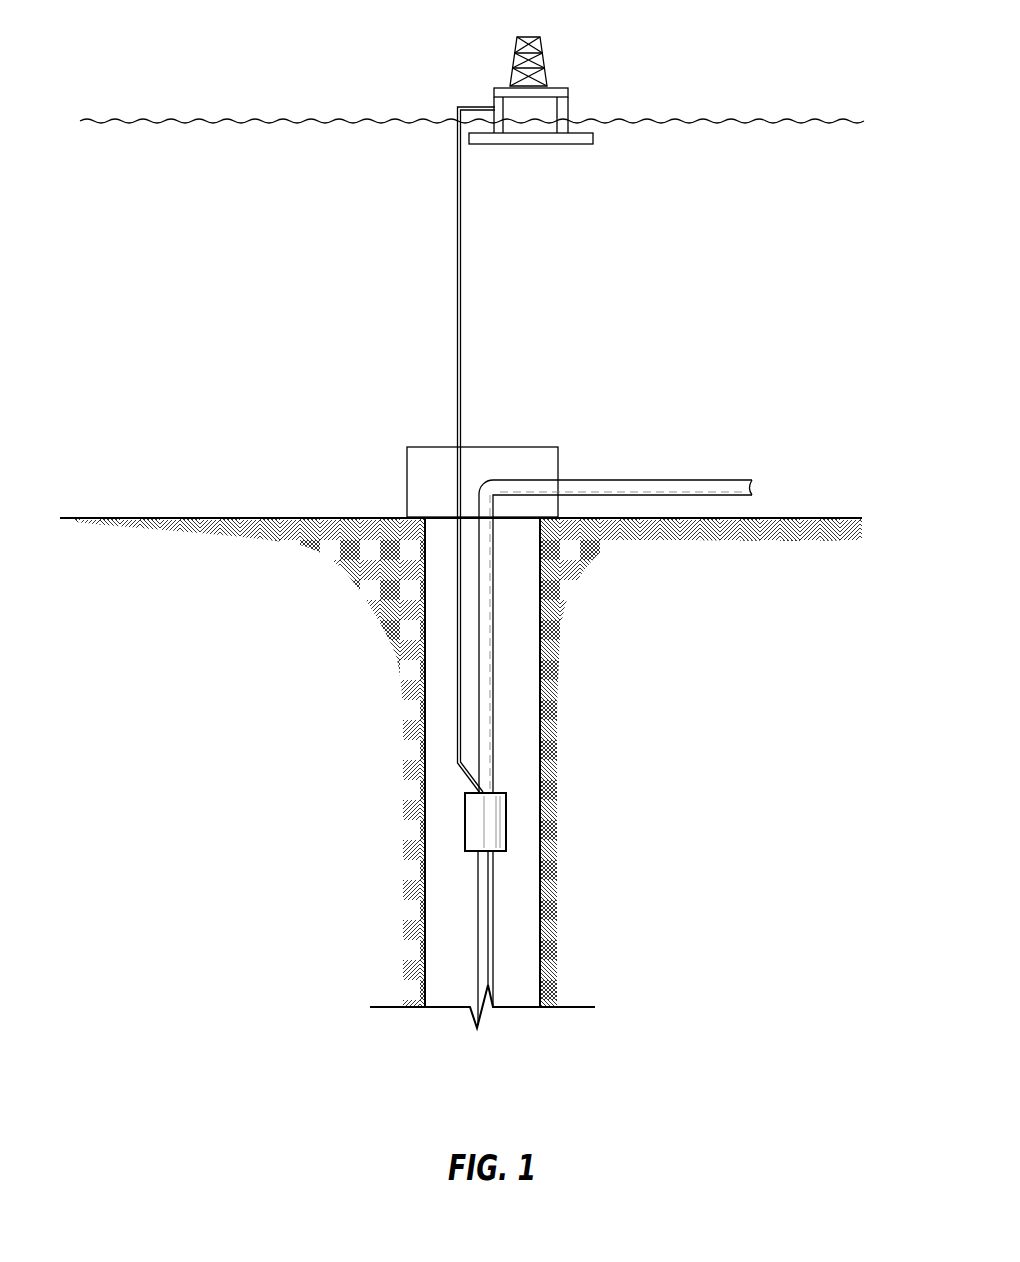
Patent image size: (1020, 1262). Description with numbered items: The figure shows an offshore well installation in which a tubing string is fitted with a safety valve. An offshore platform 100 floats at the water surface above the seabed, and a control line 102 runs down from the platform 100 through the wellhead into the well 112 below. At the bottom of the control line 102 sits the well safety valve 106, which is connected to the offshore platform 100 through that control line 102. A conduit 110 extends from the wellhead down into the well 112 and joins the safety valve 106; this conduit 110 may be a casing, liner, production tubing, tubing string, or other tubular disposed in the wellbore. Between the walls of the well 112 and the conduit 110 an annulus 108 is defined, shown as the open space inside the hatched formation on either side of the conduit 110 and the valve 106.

The offshore platform 100 is at (577, 48).
The control line 102 is at (461, 413).
The well safety valve 106 is at (508, 812).
The annulus 108 is at (532, 742).
The conduit 110 is at (497, 638).
The well 112 is at (542, 692).